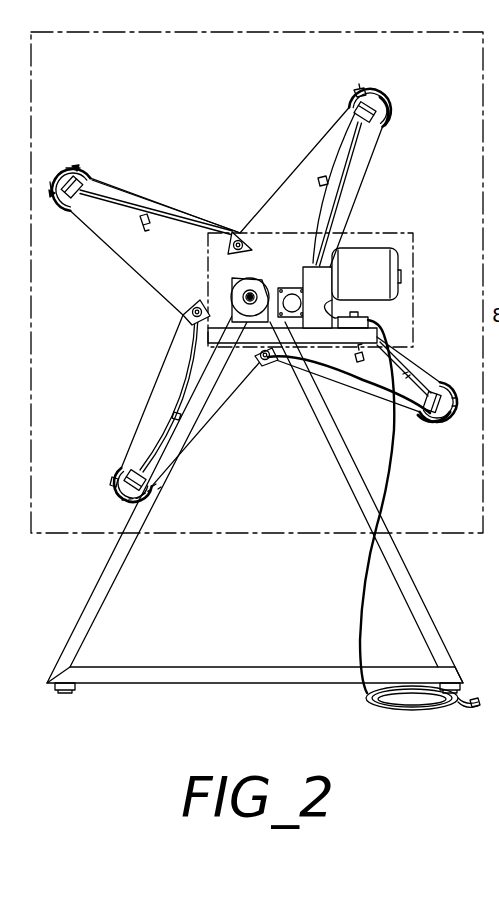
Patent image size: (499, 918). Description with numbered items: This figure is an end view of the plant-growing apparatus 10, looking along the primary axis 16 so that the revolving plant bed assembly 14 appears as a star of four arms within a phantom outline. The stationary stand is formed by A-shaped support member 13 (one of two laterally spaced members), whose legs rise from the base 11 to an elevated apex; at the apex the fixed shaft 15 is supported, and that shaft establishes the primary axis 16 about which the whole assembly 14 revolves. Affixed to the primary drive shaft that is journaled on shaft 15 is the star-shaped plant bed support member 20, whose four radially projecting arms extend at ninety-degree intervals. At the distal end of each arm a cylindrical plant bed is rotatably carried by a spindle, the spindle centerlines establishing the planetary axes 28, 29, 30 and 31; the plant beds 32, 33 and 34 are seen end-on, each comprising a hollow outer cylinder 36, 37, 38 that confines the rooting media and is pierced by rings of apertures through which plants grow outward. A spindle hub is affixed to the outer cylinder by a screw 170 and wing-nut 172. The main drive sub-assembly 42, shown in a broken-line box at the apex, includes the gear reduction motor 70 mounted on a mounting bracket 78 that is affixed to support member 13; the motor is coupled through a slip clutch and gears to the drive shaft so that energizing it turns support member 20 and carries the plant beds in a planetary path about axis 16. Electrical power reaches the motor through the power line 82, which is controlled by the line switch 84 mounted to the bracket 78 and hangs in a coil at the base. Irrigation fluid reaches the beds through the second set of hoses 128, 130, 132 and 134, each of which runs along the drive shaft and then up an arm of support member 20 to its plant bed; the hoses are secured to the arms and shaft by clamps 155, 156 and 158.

The apparatus 10 is at (255, 524).
The base member 11 is at (236, 667).
The A-shaped support member 13 is at (102, 615).
The rotatable plant bed assembly 14 is at (212, 31).
The fixed shaft 15 is at (258, 292).
The primary axis 16 is at (246, 293).
The star-shaped plant bed support member 20 is at (190, 222).
The planetary axis 28 is at (392, 125).
The planetary axis 29 is at (448, 398).
The planetary axis 30 is at (134, 468).
The planetary axis 31 is at (66, 212).
The cylindrical plant bed 32 is at (384, 98).
The cylindrical plant bed 33 is at (437, 423).
The cylindrical plant bed 34 is at (127, 497).
The outer cylinder 36 is at (353, 98).
The outer cylinder 37 is at (437, 386).
The outer cylinder 38 is at (118, 483).
The main drive sub-assembly 42 is at (415, 252).
The gear reduction motor 70 is at (374, 256).
The mounting bracket 78 is at (300, 370).
The power line 82 is at (390, 328).
The line switch 84 is at (366, 318).
The hose 128 is at (355, 150).
The hose 130 is at (378, 385).
The hose 132 is at (189, 342).
The hose 134 is at (166, 231).
The clamp 155 is at (318, 180).
The clamp 156 is at (360, 366).
The clamp 158 is at (146, 216).
The screw 170 is at (75, 165).
The wing-nut 172 is at (50, 188).